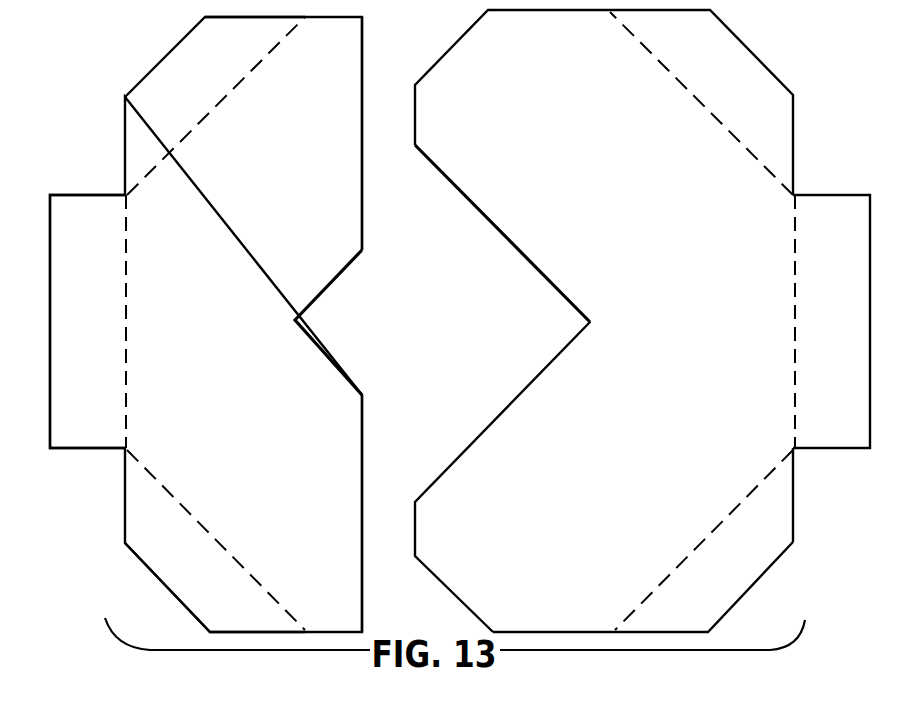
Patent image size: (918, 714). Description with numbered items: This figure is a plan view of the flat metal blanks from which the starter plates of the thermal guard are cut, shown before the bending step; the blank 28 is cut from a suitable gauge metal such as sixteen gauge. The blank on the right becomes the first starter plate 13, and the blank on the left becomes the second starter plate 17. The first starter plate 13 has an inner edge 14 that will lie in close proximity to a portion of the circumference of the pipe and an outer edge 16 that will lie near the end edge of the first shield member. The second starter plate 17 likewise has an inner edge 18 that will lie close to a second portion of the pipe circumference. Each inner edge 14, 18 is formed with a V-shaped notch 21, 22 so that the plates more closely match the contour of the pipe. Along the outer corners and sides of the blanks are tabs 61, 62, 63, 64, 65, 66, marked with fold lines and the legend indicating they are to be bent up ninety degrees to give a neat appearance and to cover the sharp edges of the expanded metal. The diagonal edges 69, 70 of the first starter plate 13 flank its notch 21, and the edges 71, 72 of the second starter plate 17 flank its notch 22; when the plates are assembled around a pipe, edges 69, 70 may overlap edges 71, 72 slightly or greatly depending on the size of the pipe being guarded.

The first starter plate 13 is at (757, 205).
The inner edge 14 is at (515, 250).
The outer edge 16 is at (765, 478).
The second starter plate 17 is at (178, 180).
The inner edge 18 is at (347, 270).
The notch 21 is at (594, 319).
The notch 22 is at (294, 320).
The blank 28 is at (250, 316).
The tab 61 is at (737, 62).
The tab 62 is at (838, 215).
The tab 63 is at (748, 573).
The tab 64 is at (162, 553).
The tab 65 is at (68, 210).
The tab 66 is at (163, 85).
The edge 69 is at (415, 105).
The edge 70 is at (410, 512).
The edge 71 is at (365, 183).
The edge 72 is at (365, 430).